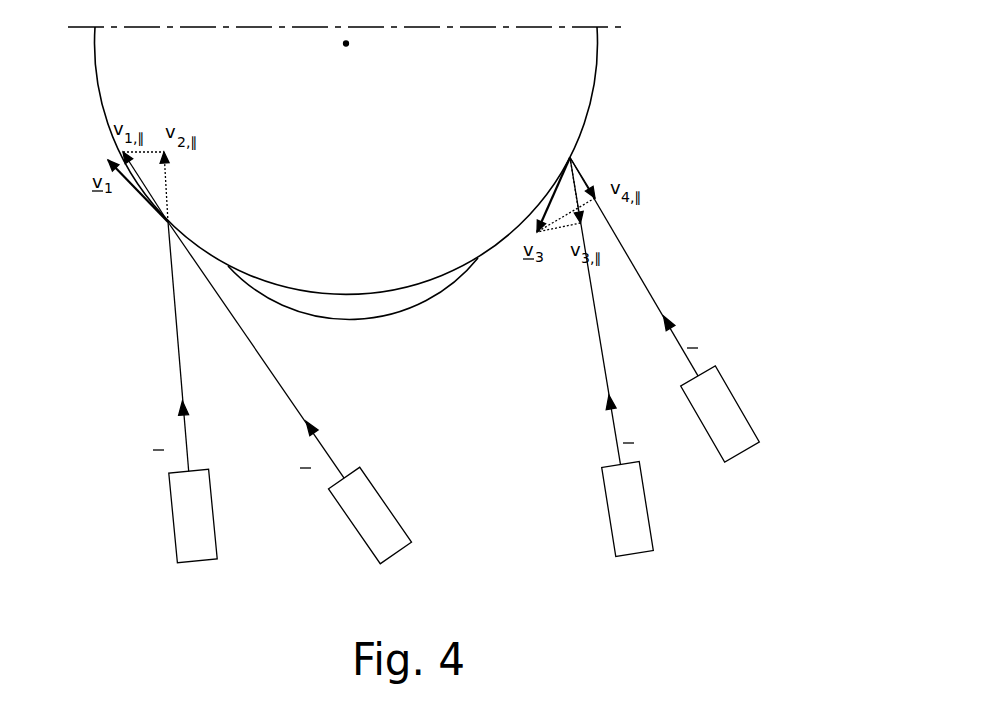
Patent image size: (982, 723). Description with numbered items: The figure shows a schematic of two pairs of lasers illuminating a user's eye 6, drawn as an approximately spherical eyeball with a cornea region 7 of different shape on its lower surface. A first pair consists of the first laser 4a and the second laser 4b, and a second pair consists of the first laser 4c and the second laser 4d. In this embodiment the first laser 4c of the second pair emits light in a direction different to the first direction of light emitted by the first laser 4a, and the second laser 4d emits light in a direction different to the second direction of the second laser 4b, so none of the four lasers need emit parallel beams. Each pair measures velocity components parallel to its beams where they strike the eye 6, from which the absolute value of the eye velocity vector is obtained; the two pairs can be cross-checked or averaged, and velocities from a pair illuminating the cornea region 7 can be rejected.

The user's eye 6 is at (320, 149).
The cornea region 7 is at (345, 318).
The first laser of the first pair of lasers 4a is at (353, 532).
The second laser of the first pair of lasers 4b is at (172, 525).
The first laser of the second pair of lasers 4c is at (737, 395).
The second laser of the second pair of lasers 4d is at (610, 527).